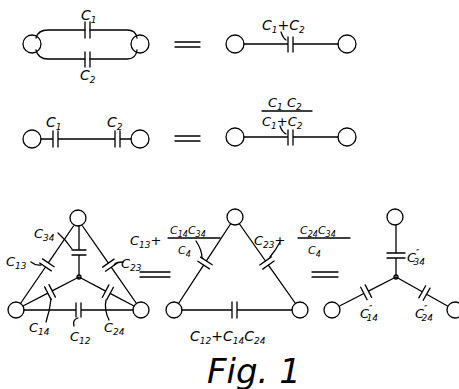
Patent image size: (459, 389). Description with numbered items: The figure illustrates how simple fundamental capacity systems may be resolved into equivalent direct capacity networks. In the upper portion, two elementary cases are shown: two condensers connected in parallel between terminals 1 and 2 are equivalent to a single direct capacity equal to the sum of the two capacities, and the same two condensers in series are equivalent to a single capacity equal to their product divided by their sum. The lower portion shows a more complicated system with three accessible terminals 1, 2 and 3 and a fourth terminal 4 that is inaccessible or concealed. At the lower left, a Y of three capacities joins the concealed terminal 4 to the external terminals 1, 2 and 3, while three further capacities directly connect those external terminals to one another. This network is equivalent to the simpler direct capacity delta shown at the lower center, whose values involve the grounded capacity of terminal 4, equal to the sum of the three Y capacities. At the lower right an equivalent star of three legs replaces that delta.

The terminal 1 is at (174, 176).
The terminal 2 is at (295, 176).
The terminal 3 is at (236, 217).
The terminal 4 is at (236, 287).